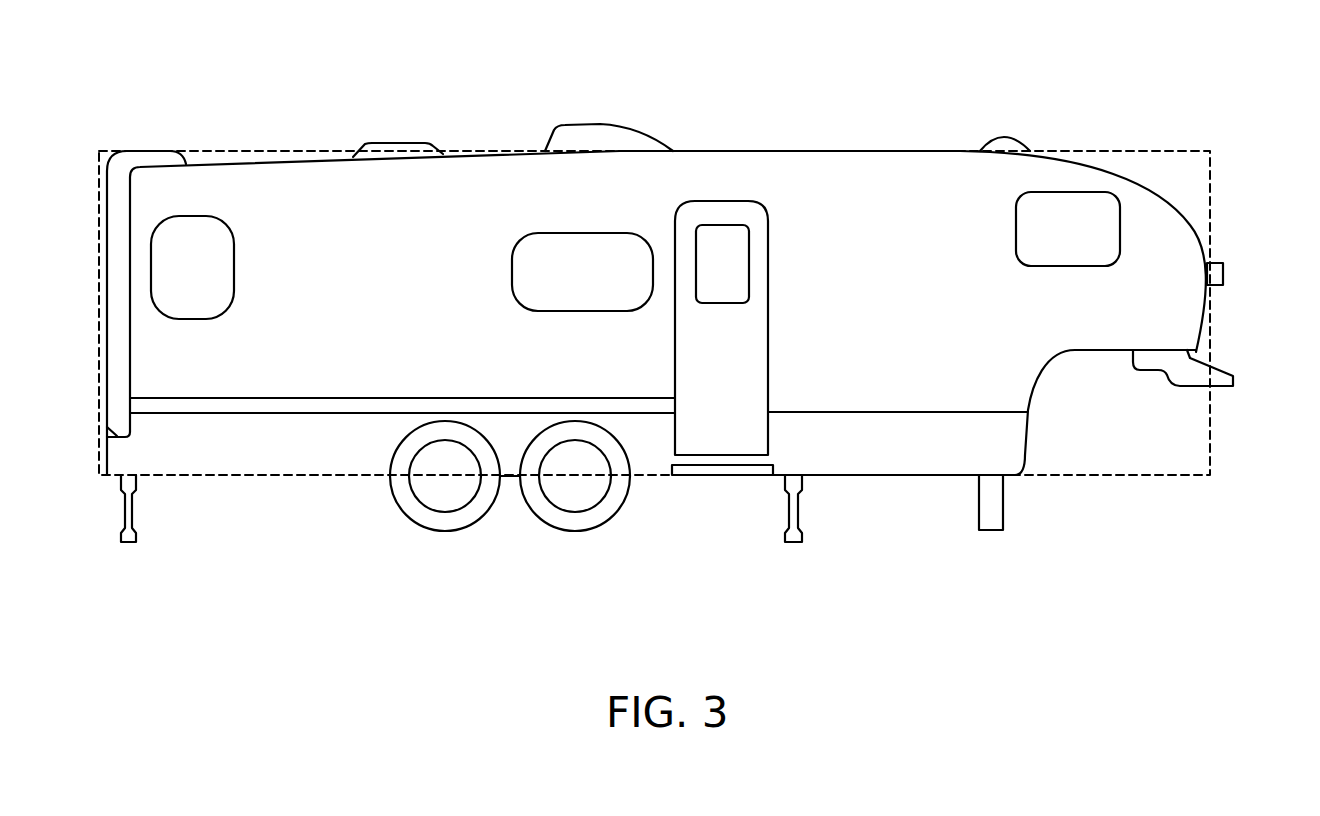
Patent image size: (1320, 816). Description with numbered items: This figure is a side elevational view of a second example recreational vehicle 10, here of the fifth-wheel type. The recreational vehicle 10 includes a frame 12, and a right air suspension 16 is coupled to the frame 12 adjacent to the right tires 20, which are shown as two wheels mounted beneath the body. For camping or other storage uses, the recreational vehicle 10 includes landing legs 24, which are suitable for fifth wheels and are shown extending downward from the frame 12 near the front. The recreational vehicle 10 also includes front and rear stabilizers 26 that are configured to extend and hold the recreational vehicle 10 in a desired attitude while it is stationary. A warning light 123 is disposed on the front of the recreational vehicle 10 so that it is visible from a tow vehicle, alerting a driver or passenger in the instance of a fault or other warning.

The recreational vehicle 10 is at (1008, 83).
The frame 12 is at (892, 478).
The right air suspension 16 is at (510, 478).
The right tire 20 is at (445, 532).
The landing legs 24 is at (990, 531).
The stabilizers 26 is at (129, 544).
The warning light 123 is at (1223, 275).